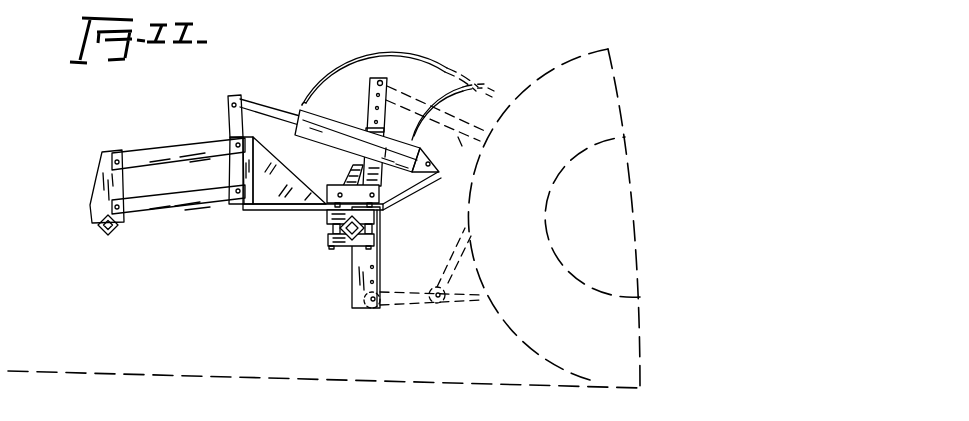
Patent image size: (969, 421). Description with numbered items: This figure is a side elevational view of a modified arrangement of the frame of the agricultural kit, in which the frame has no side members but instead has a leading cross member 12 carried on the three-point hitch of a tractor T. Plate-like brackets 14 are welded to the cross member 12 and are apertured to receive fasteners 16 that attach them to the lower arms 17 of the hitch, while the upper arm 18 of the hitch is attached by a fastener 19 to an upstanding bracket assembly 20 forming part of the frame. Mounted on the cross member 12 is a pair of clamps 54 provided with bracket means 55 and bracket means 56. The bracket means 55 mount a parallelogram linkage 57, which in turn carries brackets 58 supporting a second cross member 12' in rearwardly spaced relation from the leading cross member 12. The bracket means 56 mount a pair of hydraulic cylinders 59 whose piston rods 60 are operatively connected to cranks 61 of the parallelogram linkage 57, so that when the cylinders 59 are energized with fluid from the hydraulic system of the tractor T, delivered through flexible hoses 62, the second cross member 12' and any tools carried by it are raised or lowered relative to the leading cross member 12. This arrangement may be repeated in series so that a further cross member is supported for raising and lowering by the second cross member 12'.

The tractor T is at (577, 54).
The brackets 58 is at (93, 197).
The second cross member 12' is at (99, 246).
The parallelogram linkage 57 is at (191, 160).
The bracket 61 is at (229, 121).
The piston rods 60 is at (272, 111).
The bracket means 55 is at (246, 204).
The hydraulic cylinders 59 is at (350, 137).
The upstanding bracket assembly 20 is at (369, 110).
The fastener 19 is at (379, 81).
The flexible hoses 62 is at (425, 60).
The upper arm 18 is at (487, 136).
The bracket means 56 is at (417, 181).
The brackets 14 is at (382, 260).
The fasteners 16 is at (372, 306).
The clamps 54 is at (327, 239).
The cross member 12 is at (343, 249).
The lower arms 17 is at (423, 303).